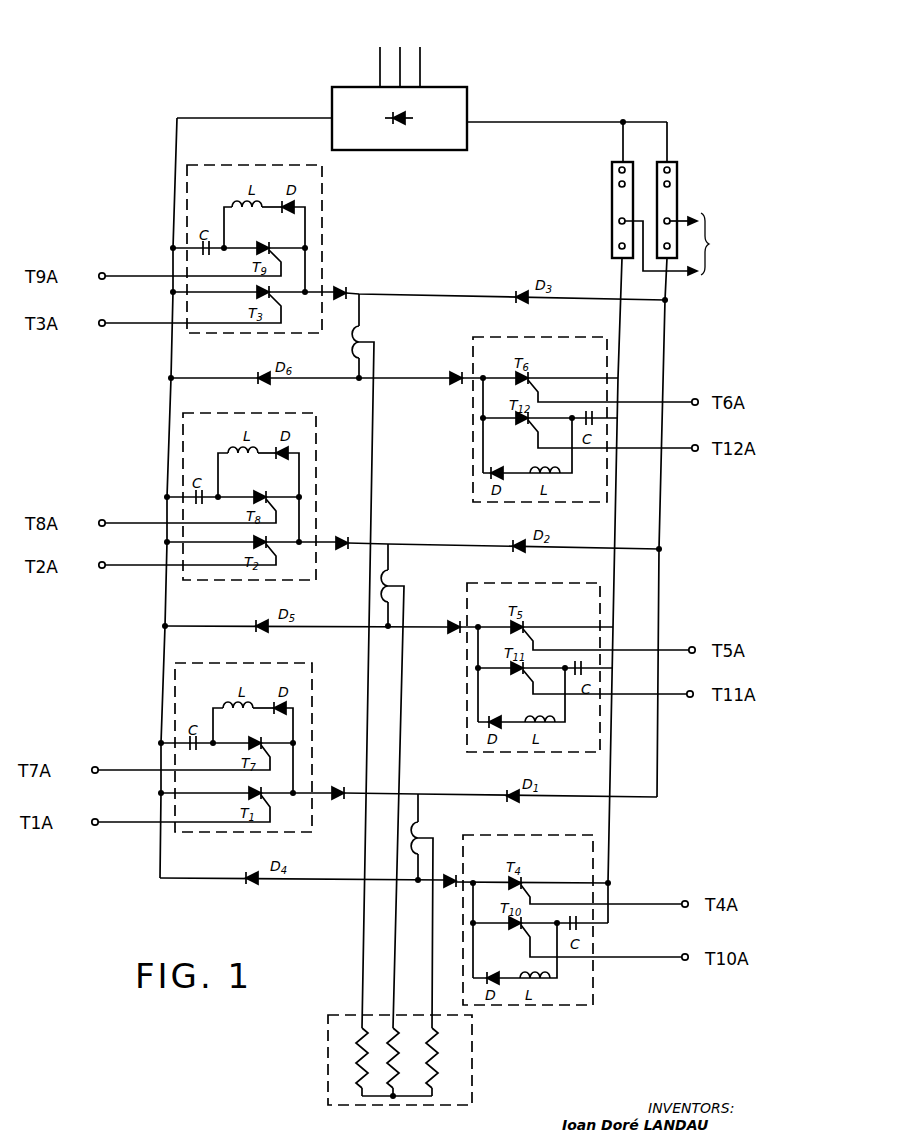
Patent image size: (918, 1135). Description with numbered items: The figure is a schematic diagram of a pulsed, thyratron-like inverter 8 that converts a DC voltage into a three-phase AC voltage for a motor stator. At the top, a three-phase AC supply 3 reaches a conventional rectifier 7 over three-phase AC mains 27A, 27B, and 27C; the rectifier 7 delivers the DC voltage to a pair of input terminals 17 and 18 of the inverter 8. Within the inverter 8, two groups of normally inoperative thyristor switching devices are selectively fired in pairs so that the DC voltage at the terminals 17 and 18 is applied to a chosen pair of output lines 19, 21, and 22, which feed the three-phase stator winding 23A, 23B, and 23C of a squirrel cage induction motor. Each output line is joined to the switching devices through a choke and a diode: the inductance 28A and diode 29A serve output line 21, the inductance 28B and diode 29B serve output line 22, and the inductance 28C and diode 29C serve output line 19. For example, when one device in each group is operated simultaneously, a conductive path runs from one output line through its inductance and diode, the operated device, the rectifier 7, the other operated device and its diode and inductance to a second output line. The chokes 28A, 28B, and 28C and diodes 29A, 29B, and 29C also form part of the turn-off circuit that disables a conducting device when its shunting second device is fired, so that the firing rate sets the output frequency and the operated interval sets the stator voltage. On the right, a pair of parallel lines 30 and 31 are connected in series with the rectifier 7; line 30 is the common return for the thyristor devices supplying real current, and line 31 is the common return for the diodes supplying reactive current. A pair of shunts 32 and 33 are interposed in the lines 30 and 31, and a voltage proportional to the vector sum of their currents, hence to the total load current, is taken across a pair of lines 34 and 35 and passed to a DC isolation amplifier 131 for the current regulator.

The three-phase AC mains 3 is at (400, 59).
The three-phase AC mains 27A is at (380, 66).
The three-phase AC mains 27B is at (400, 62).
The three-phase AC mains 27C is at (420, 79).
The rectifier 7 is at (432, 152).
The inverter 8 is at (592, 97).
The input terminal 17 is at (238, 118).
The input terminal 18 is at (508, 122).
The line 30 is at (618, 143).
The line 31 is at (668, 143).
The shunt 32 is at (612, 208).
The shunt 33 is at (677, 217).
The line 34 is at (678, 280).
The line 35 is at (696, 216).
The DC isolation amplifier 131 is at (730, 244).
The inductance 28A is at (397, 583).
The inductance 28B is at (426, 833).
The inductance 28C is at (368, 334).
The diode 29A is at (455, 637).
The diode 29B is at (340, 804).
The diode 29C is at (454, 390).
The output line 19 is at (362, 925).
The output line 21 is at (393, 955).
The output line 22 is at (432, 980).
The stator winding 23A is at (352, 1060).
The stator winding 23B is at (383, 1066).
The stator winding 23C is at (436, 1057).